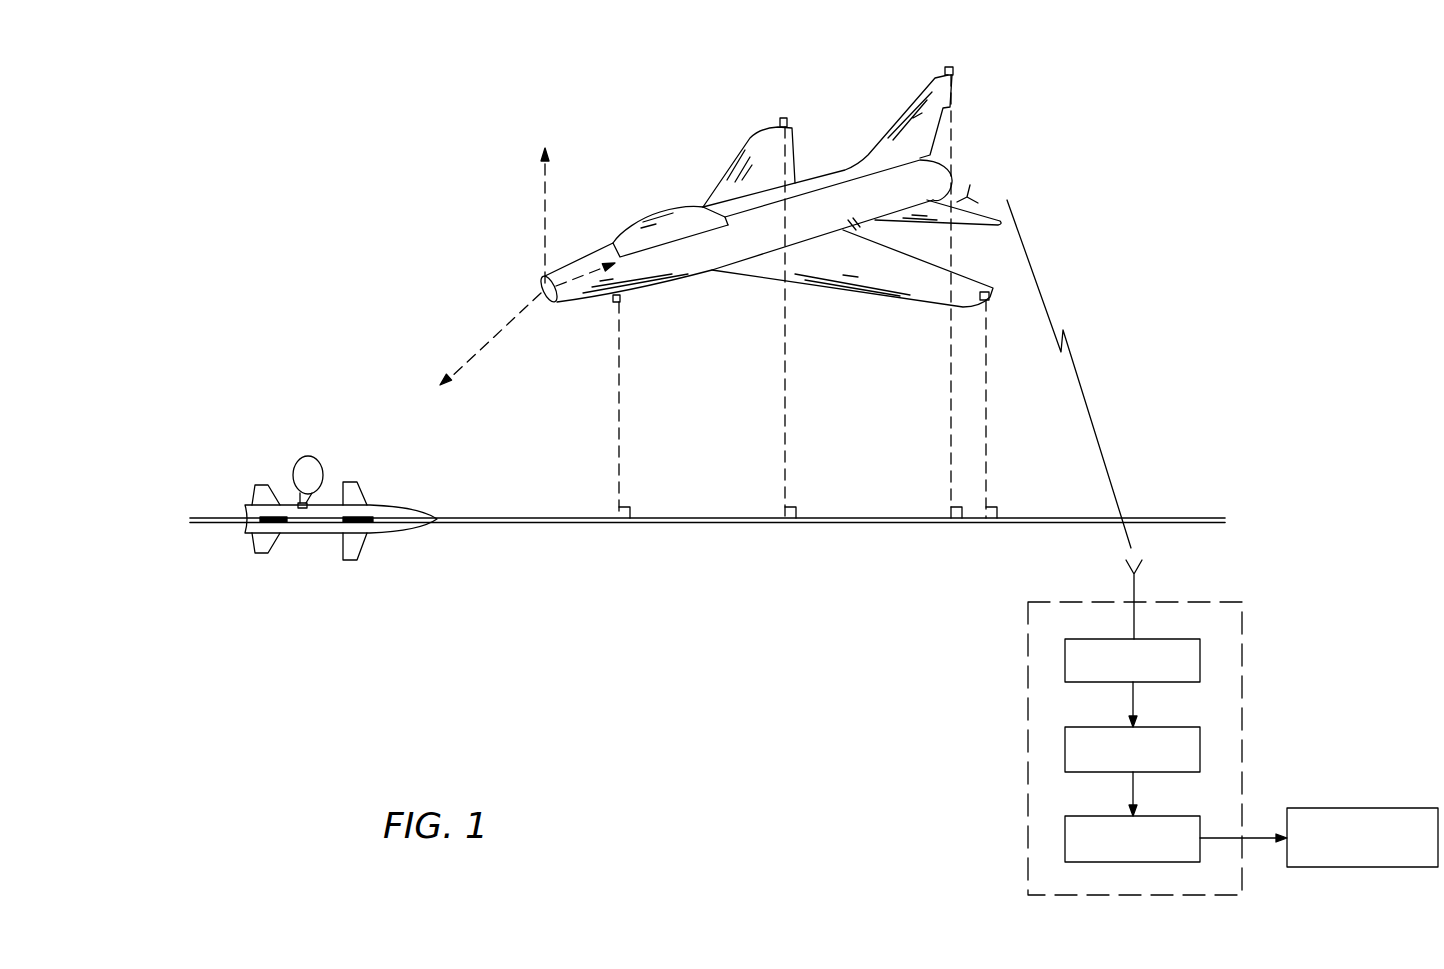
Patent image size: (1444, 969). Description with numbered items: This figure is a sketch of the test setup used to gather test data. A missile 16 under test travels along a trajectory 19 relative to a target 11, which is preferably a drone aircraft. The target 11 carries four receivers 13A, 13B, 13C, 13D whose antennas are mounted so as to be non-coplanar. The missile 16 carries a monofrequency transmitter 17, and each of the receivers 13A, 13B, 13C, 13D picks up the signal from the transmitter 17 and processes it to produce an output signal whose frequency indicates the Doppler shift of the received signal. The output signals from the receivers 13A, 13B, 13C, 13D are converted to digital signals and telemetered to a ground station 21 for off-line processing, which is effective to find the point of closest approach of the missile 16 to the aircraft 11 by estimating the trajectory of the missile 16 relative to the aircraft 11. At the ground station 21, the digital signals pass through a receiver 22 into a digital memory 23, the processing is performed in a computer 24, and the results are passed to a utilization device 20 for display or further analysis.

The target 11 is at (573, 303).
The receiver 13A is at (620, 302).
The receiver 13B is at (990, 294).
The receiver 13C is at (784, 118).
The receiver 13D is at (950, 65).
The missile 16 is at (345, 515).
The monofrequency transmitter 17 is at (308, 508).
The trajectory 19 is at (485, 523).
The utilization device 20 is at (1323, 808).
The ground station 21 is at (1197, 602).
The receiver 22 is at (1163, 638).
The digital memory 23 is at (1163, 725).
The computer 24 is at (1163, 815).